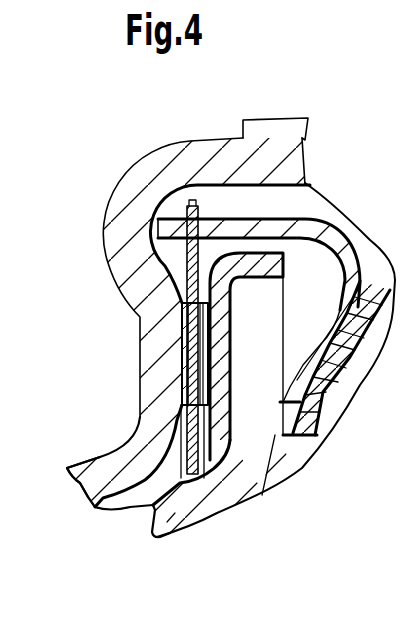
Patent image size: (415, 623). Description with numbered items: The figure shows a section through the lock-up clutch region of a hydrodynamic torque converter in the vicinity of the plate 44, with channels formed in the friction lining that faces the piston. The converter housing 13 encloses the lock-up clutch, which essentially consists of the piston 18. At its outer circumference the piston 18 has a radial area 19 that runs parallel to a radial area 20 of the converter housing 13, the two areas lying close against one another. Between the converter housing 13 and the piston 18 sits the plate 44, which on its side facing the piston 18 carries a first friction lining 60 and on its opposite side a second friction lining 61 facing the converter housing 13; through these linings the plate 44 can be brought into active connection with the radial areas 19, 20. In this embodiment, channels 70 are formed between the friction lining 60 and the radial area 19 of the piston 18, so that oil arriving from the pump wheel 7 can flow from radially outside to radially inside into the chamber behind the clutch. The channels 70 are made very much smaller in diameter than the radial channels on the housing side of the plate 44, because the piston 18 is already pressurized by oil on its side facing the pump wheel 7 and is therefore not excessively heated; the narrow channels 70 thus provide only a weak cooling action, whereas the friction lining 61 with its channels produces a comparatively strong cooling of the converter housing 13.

The pump wheel 7 is at (388, 282).
The converter housing 13 is at (93, 488).
The piston 18 is at (167, 522).
The radial area 19 is at (228, 383).
The radial area 20 is at (177, 375).
The plate 44 is at (194, 205).
The first friction lining 60 is at (193, 340).
The second friction lining 61 is at (183, 320).
The channels 70 is at (228, 383).